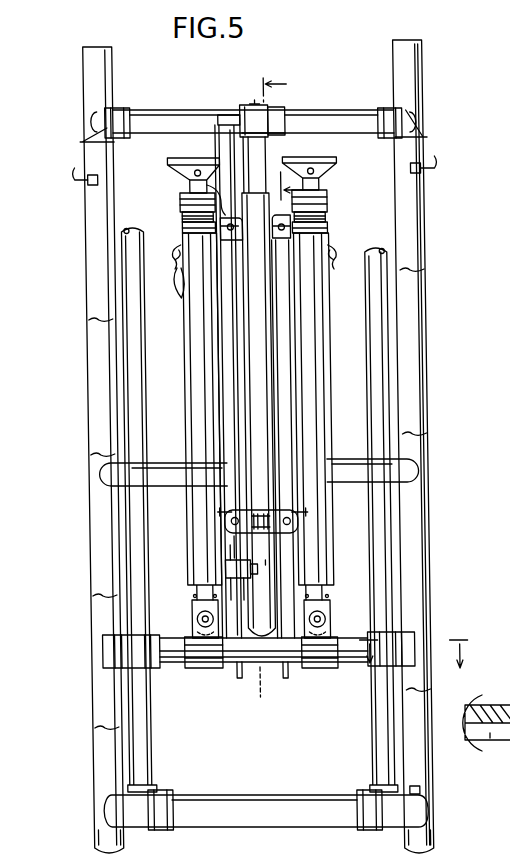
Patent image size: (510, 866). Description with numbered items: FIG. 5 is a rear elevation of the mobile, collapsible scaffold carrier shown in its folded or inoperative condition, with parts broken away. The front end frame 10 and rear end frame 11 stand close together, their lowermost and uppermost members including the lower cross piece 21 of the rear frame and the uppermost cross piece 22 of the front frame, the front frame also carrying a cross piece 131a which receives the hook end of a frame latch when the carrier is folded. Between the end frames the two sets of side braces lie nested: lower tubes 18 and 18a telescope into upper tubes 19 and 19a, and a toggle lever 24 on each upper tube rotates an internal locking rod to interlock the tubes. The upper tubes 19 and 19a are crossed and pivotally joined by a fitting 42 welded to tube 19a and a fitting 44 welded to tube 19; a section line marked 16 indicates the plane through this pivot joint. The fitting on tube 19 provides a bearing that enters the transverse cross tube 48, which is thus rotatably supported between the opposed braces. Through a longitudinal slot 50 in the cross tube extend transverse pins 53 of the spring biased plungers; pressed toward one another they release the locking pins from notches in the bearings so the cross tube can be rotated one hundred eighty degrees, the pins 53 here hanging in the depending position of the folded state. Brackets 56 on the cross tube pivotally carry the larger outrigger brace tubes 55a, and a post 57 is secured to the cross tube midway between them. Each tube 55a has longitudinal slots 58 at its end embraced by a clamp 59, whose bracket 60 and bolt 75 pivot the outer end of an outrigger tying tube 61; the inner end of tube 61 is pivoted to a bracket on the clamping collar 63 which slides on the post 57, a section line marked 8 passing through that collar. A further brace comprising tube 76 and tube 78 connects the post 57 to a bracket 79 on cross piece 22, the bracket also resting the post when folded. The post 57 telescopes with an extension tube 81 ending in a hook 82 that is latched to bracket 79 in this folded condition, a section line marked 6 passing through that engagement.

The front end frame 10 is at (100, 78).
The rear end frame 11 is at (430, 826).
The section line 16 is at (413, 646).
The lower tube 18 is at (157, 794).
The lower tube 18a is at (420, 790).
The upper tube 19 is at (122, 250).
The upper tube 19a is at (416, 288).
The lower cross piece 21 is at (268, 794).
The uppermost cross piece 22 is at (355, 112).
The toggle lever 24 is at (64, 176).
The fitting 42 is at (106, 649).
The fitting 44 is at (150, 641).
The cross tube 48 is at (174, 680).
The longitudinal slot 50 is at (252, 698).
The transverse pins 53 is at (282, 678).
The outrigger brace tube 55a is at (192, 322).
The bracket 56 is at (212, 612).
The post 57 is at (258, 430).
The longitudinal slots 58 is at (325, 252).
The clamp 59 is at (329, 220).
The bracket 60 is at (180, 196).
The outrigger tying tube 61 is at (283, 307).
The clamping collar 63 is at (270, 583).
The section line 6 is at (272, 143).
The bolt 75 is at (182, 229).
The tube 76 is at (220, 563).
The tube 78 is at (208, 152).
The bracket 79 is at (275, 118).
The section line 8 is at (268, 522).
The extension tube 81 is at (274, 156).
The hook 82 is at (252, 104).
The cross piece 131a is at (344, 478).